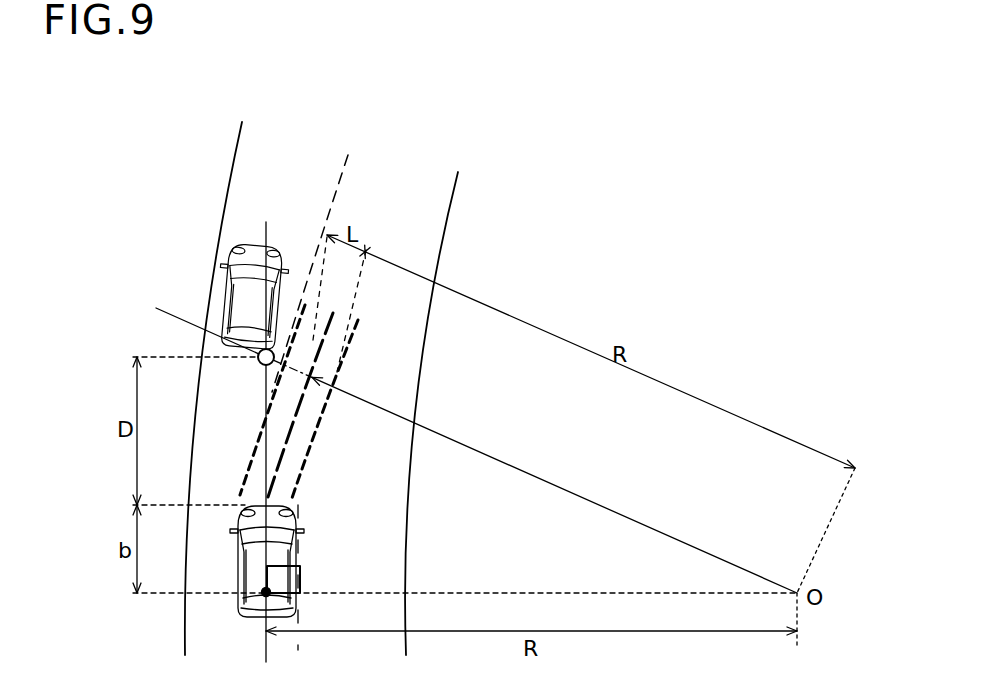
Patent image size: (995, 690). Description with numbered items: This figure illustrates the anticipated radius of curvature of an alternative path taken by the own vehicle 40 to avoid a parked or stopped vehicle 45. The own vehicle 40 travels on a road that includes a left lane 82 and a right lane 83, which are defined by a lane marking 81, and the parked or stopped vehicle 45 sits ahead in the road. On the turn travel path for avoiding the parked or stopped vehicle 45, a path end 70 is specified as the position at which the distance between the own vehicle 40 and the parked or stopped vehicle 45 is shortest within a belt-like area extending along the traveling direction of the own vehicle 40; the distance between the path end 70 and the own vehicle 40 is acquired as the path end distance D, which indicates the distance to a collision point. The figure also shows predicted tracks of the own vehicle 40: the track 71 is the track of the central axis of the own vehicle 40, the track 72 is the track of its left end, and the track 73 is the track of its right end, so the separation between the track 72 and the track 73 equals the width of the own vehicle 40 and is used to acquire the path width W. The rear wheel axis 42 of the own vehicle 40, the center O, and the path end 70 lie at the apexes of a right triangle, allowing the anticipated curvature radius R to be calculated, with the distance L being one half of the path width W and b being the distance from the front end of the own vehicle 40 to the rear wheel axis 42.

The own vehicle 40 is at (238, 606).
The rear wheel axis 42 is at (265, 596).
The parked or stopped vehicle 45 is at (232, 256).
The path end 70 is at (262, 363).
The track 71 is at (282, 440).
The track 72 is at (250, 446).
The track 73 is at (333, 397).
The lane marking 81 is at (350, 152).
The left lane 82 is at (262, 145).
The right lane 83 is at (435, 178).